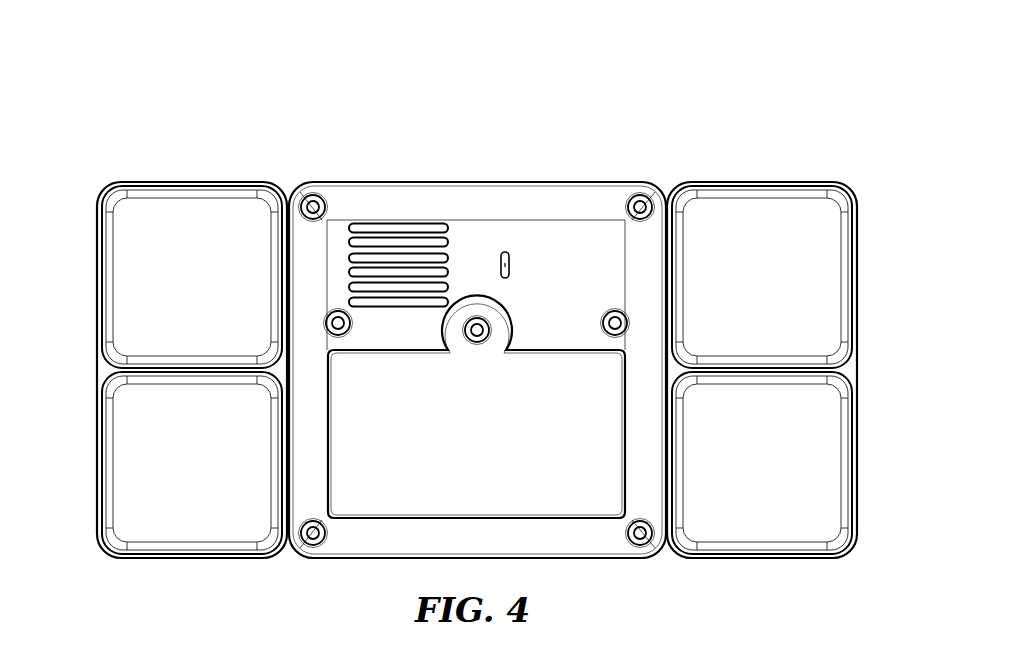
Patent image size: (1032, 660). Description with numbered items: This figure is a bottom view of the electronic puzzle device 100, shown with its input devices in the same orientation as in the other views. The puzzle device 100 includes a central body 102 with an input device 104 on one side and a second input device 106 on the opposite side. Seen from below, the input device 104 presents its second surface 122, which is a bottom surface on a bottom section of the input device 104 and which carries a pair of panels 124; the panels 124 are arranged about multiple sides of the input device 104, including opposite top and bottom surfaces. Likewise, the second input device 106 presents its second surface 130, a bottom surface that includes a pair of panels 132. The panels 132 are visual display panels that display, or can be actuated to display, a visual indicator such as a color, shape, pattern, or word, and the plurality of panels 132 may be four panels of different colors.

The electronic puzzle device 100 is at (472, 306).
The body 102 is at (508, 182).
The input device 104 is at (152, 351).
The second input device 106 is at (796, 361).
The second surface 122 is at (105, 458).
The panels 124 is at (122, 513).
The second surface 130 is at (848, 555).
The panels 132 is at (835, 473).